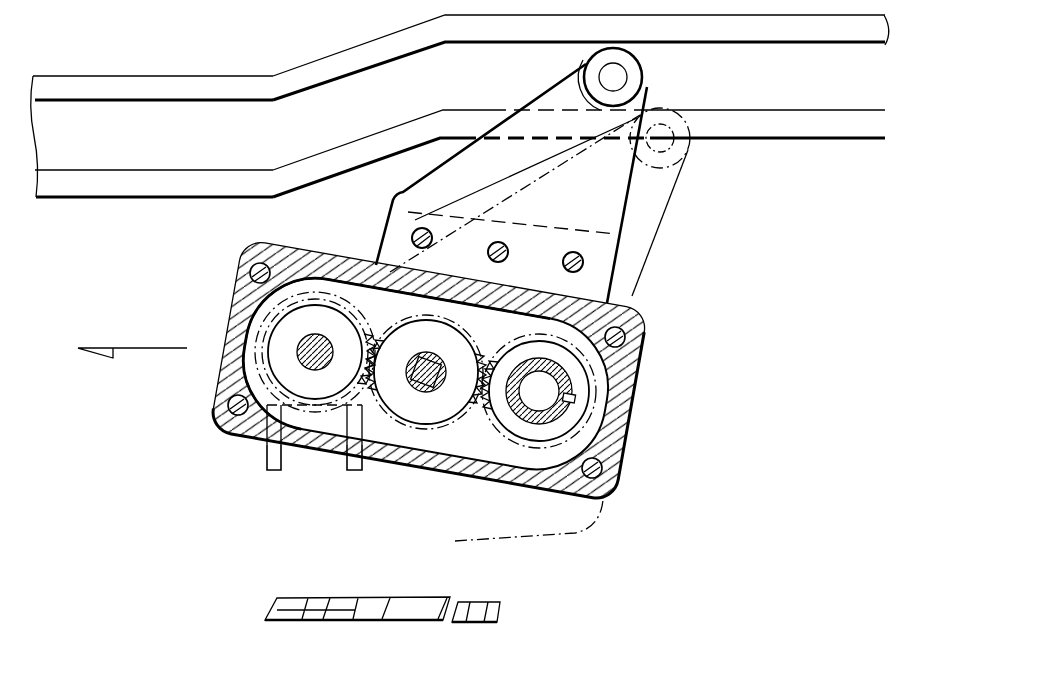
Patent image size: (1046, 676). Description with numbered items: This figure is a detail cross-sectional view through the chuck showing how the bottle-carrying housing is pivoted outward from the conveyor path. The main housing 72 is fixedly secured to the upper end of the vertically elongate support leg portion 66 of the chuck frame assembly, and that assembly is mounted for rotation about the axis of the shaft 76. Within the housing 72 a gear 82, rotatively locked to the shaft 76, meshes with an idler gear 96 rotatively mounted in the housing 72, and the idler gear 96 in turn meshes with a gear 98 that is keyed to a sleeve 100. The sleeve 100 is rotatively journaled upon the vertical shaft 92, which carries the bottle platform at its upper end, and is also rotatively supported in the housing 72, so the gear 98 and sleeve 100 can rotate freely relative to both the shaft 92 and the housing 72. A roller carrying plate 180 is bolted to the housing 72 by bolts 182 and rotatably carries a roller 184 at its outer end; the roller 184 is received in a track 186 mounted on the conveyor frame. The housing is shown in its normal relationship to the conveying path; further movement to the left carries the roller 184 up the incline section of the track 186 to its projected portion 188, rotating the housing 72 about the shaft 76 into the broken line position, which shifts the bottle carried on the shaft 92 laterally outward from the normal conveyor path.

The support leg portion 66 is at (266, 465).
The main housing 72 is at (618, 472).
The shaft 76 is at (305, 352).
The gear 82 is at (266, 465).
The vertical shaft 92 is at (548, 388).
The idler gear 96 is at (427, 413).
The gear 98 is at (589, 457).
The sleeve 100 is at (570, 400).
The roller carrying plate 180 is at (612, 196).
The bolts 182 is at (570, 254).
The roller 184 is at (648, 72).
The track 186 is at (812, 130).
The projected portion 188 is at (100, 186).